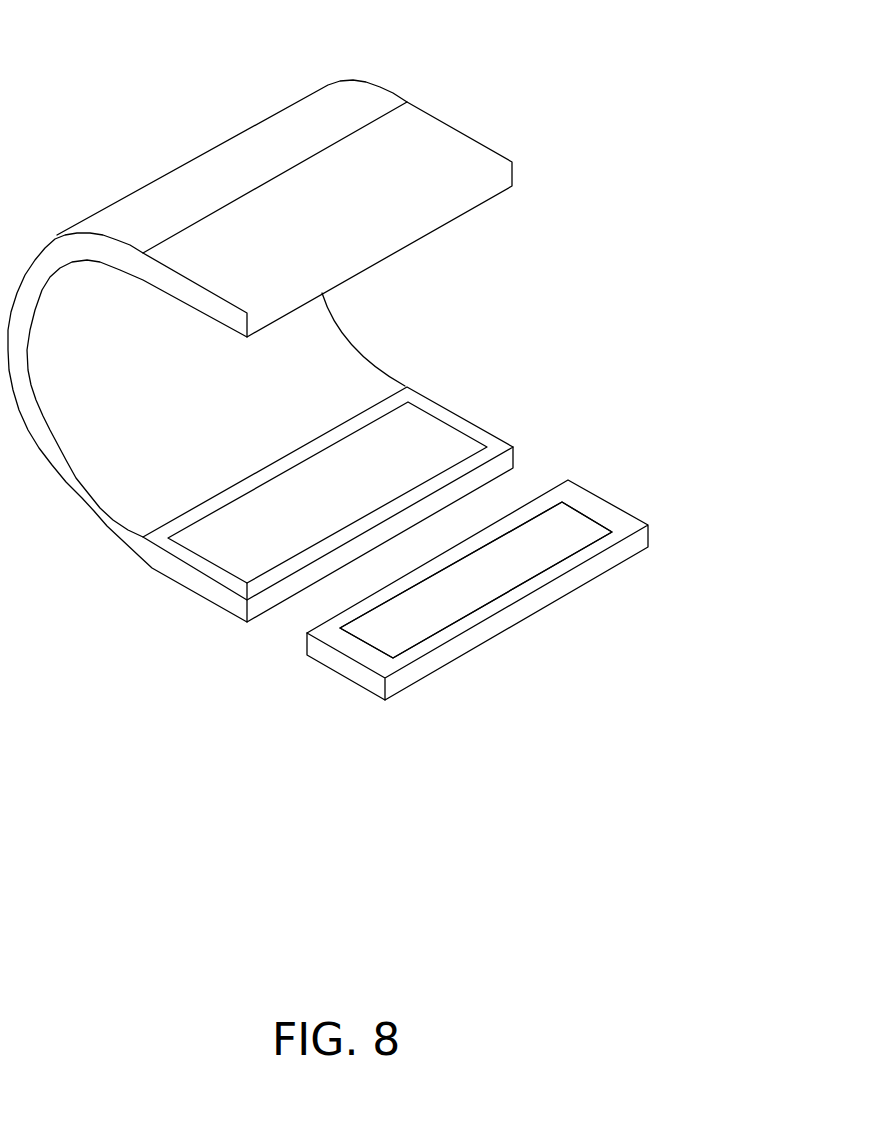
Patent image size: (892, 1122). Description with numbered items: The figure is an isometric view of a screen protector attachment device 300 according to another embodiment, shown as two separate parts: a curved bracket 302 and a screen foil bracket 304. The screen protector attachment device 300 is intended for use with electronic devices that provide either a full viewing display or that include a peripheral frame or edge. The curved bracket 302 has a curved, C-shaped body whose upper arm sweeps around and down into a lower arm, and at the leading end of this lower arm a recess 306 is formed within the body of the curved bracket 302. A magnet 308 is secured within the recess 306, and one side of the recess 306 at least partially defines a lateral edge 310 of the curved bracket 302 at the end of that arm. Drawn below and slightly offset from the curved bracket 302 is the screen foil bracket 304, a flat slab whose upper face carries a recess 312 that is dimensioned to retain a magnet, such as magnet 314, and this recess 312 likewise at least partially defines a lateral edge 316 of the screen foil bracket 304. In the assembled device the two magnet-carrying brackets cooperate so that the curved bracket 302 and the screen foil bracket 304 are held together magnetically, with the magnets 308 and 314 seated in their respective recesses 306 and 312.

The screen protector attachment device 300 is at (168, 90).
The curved bracket 302 is at (450, 122).
The screen foil bracket 304 is at (460, 652).
The recess 306 is at (218, 568).
The magnet 308 is at (210, 539).
The lateral edge 310 is at (505, 460).
The recess 312 is at (602, 523).
The magnet 314 is at (552, 547).
The lateral edge 316 is at (302, 619).